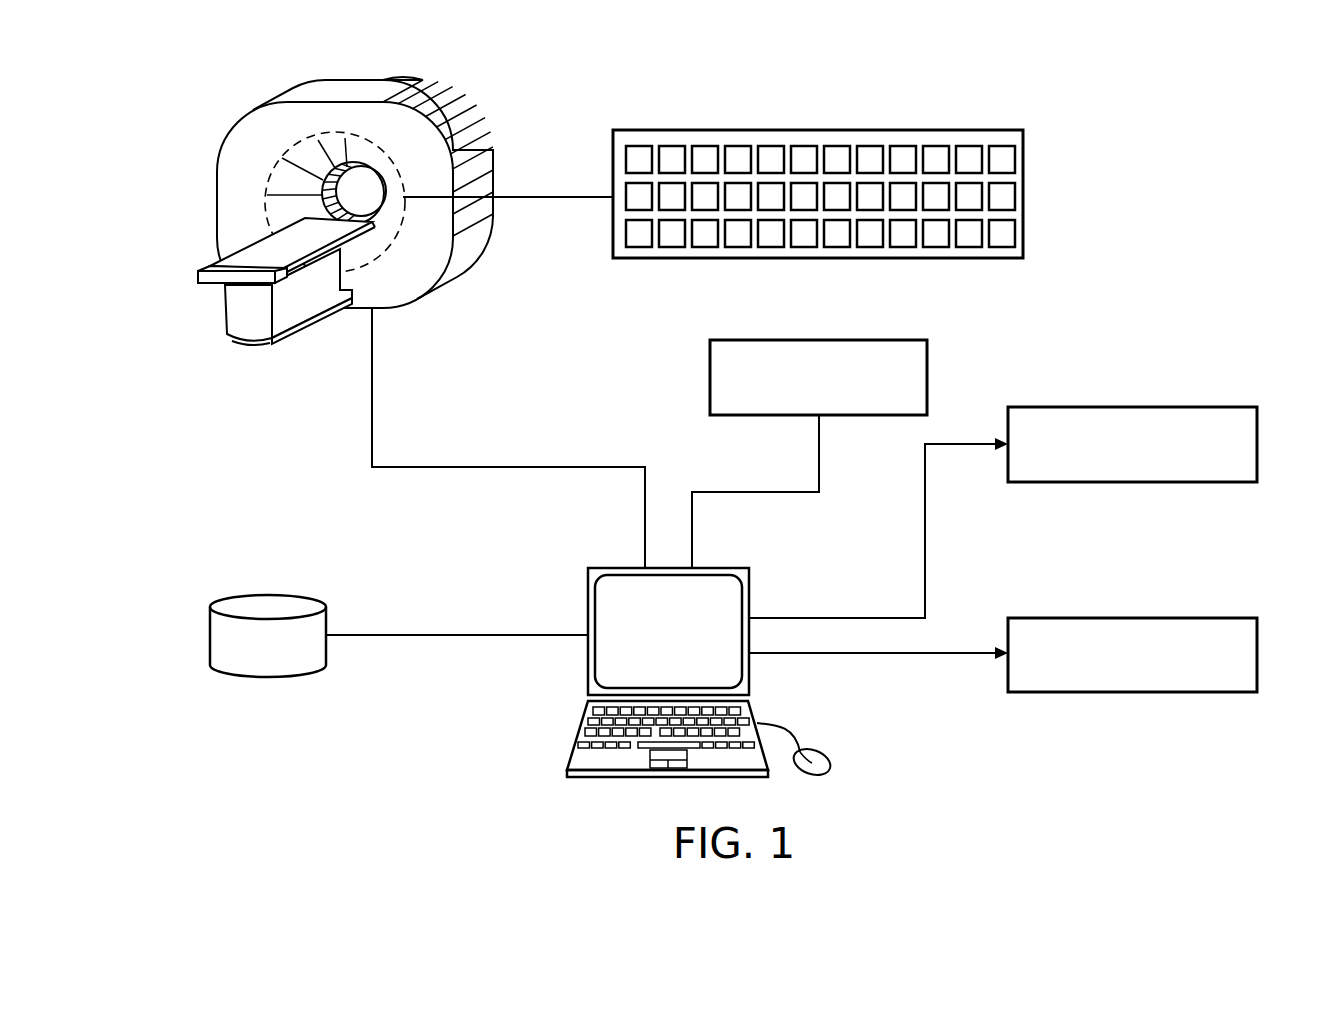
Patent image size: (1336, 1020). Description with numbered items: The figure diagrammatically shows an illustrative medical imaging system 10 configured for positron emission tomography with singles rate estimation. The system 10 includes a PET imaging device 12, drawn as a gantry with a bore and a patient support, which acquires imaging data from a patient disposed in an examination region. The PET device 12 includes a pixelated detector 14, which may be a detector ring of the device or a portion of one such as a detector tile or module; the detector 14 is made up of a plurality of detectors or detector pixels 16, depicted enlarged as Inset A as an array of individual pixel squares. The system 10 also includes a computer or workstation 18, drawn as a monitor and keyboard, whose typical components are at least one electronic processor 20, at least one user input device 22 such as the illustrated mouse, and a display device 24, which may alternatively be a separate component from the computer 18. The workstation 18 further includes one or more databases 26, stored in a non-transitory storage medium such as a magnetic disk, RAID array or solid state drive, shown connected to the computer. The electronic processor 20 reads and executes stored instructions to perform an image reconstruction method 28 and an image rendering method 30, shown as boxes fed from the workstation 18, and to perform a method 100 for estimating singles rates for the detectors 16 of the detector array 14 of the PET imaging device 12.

The medical imaging system 10 is at (1200, 150).
The positron emission tomography (PET) imaging device 12 is at (225, 300).
The pixelated detector 14 is at (387, 162).
The detector pixels 16 is at (1005, 233).
The computer or workstation 18 is at (702, 663).
The electronic processor 20 is at (593, 662).
The user input device 22 is at (831, 762).
The display device 24 is at (683, 645).
The databases 26 is at (210, 636).
The image reconstruction method 28 is at (1257, 447).
The image rendering method 30 is at (1257, 657).
The method for estimating singles rates 100 is at (710, 375).